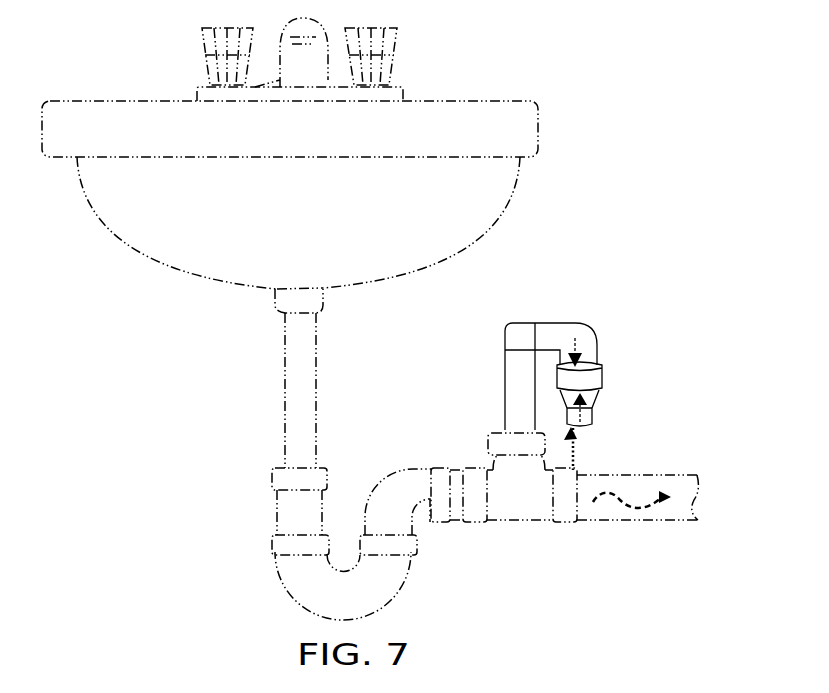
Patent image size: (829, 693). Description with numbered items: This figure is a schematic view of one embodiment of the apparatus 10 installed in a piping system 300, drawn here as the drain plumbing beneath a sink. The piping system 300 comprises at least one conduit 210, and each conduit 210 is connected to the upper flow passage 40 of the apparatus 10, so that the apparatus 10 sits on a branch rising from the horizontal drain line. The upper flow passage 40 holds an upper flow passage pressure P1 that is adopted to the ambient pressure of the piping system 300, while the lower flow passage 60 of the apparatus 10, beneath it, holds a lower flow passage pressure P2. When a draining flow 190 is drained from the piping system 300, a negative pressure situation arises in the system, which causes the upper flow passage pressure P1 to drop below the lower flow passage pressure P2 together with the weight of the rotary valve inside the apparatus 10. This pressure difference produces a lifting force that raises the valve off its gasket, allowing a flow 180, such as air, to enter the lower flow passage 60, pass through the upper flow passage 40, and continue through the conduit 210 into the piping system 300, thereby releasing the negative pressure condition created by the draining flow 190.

The apparatus 10 is at (624, 390).
The upper flow passage 40 is at (603, 371).
The lower flow passage 60 is at (598, 403).
The conduit 210 is at (555, 328).
The upper flow passage pressure P1 is at (578, 347).
The lower flow passage pressure P2 is at (583, 433).
The flow 180 is at (578, 470).
The draining flow 190 is at (638, 506).
The piping system 300 is at (277, 438).